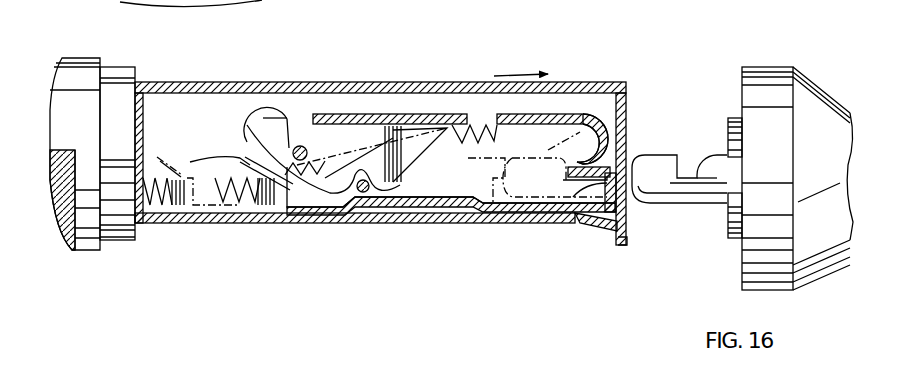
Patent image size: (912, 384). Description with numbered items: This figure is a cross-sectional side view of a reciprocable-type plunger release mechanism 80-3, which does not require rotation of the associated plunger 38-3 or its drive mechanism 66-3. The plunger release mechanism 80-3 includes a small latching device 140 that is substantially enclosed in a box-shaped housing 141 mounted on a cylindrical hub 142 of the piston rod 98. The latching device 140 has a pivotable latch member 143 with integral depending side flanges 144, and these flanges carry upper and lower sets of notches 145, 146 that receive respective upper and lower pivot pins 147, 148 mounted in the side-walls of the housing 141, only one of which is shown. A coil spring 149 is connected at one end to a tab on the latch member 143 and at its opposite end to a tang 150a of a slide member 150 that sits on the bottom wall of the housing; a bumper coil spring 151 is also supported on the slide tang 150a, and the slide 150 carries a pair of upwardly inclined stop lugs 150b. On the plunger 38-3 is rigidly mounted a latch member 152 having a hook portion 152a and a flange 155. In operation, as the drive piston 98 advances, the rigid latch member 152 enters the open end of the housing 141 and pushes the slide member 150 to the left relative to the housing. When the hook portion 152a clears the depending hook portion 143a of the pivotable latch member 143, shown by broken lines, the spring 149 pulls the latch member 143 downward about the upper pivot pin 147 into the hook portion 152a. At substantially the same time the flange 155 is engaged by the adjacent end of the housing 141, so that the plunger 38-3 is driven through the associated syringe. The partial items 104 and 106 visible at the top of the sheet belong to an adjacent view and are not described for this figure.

The piston rod 98 is at (70, 77).
The cylindrical hub 142 is at (120, 82).
The drive mechanism 66-3 is at (381, 126).
The housing 141 is at (408, 85).
The pivotable latch member 143 is at (434, 122).
The depending hook portion 143a is at (580, 147).
The side flanges 144 is at (345, 128).
The upper notches 145 is at (296, 117).
The lower notches 146 is at (364, 213).
The upper pivot pin 147 is at (298, 150).
The lower pivot pin 148 is at (380, 207).
The coil spring 149 is at (316, 210).
The slide member 150 is at (553, 217).
The tang 150a is at (255, 195).
The stop lugs 150b is at (190, 147).
The bumper coil spring 151 is at (222, 193).
The latch member 152 is at (652, 157).
The hook portion 152a is at (689, 178).
The flange 155 is at (728, 226).
The plunger 38-3 is at (772, 80).
The plunger release mechanism 80-3 is at (503, 46).
The latching device 140 is at (526, 60).
The element 104 is at (71, 6).
The element 106 is at (256, 0).